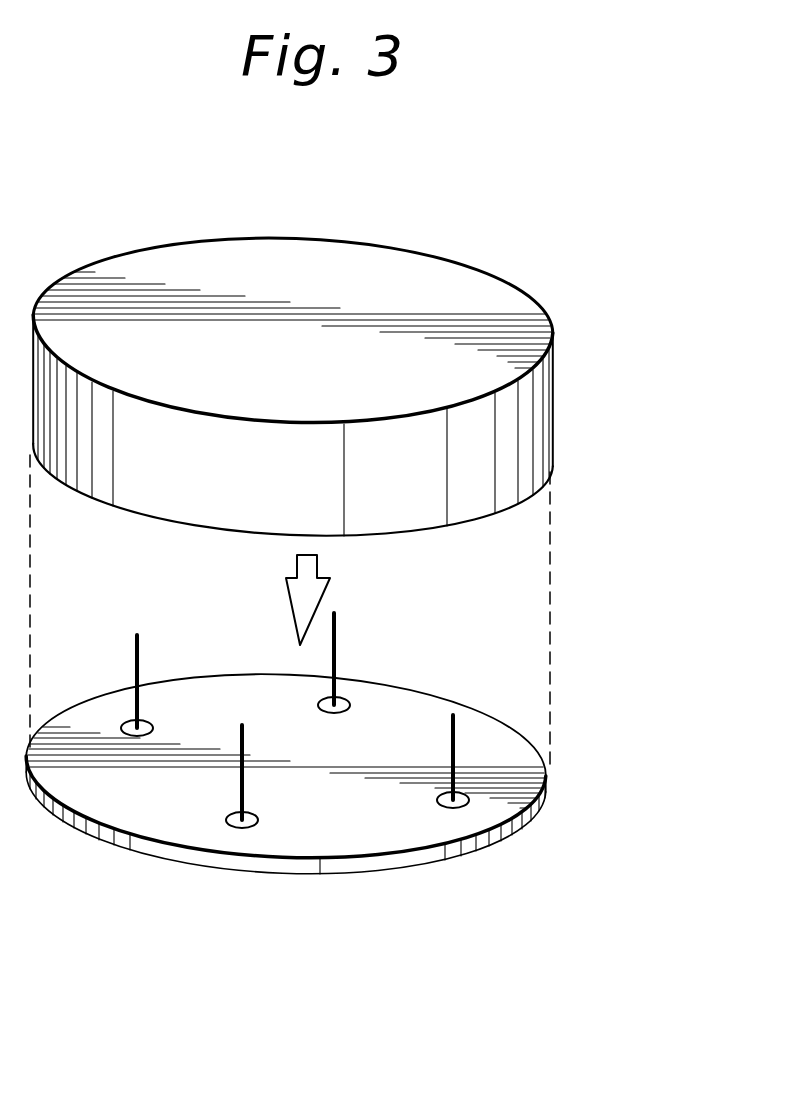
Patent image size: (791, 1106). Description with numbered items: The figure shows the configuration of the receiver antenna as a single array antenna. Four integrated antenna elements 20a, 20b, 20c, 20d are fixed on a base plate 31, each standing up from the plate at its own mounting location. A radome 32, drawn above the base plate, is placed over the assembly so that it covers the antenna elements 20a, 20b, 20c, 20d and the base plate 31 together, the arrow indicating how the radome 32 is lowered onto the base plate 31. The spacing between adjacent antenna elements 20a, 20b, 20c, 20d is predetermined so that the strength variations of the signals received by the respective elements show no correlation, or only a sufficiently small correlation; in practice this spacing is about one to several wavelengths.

The radome 32 is at (553, 401).
The base plate 31 is at (508, 734).
The antenna element 20a is at (140, 652).
The antenna element 20b is at (337, 643).
The antenna element 20c is at (245, 786).
The antenna element 20d is at (455, 746).